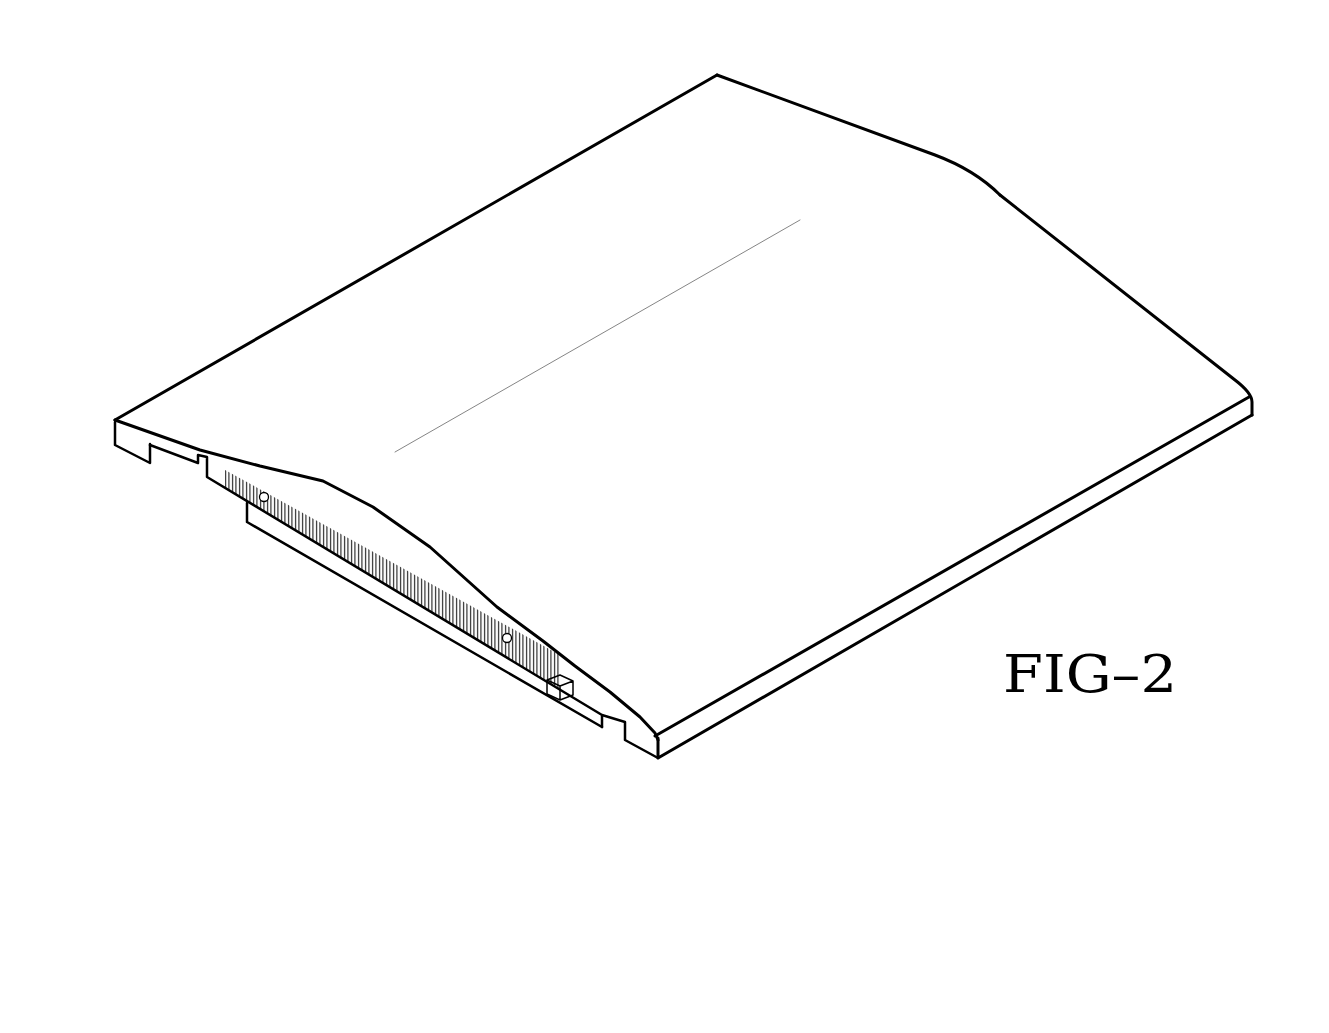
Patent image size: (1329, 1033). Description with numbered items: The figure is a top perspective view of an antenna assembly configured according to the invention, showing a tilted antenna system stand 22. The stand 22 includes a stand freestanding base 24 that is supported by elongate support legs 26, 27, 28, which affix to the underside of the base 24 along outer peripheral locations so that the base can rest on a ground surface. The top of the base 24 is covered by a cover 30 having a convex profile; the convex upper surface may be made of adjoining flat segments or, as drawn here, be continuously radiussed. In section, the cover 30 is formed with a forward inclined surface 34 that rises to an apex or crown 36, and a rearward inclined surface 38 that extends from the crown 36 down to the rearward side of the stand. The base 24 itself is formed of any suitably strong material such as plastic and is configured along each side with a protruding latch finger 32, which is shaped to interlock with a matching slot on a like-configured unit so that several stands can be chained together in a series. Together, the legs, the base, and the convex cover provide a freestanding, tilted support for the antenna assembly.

The tilted antenna system stand 22 is at (701, 407).
The stand freestanding base 24 is at (404, 606).
The elongate support leg 26 is at (1080, 516).
The elongate support leg 27 is at (484, 661).
The elongate support leg 28 is at (127, 443).
The cover 30 is at (421, 477).
The protruding latch finger 32 is at (557, 689).
The forward inclined surface 34 is at (1175, 346).
The apex or crown 36 is at (979, 203).
The rearward inclined surface 38 is at (760, 104).